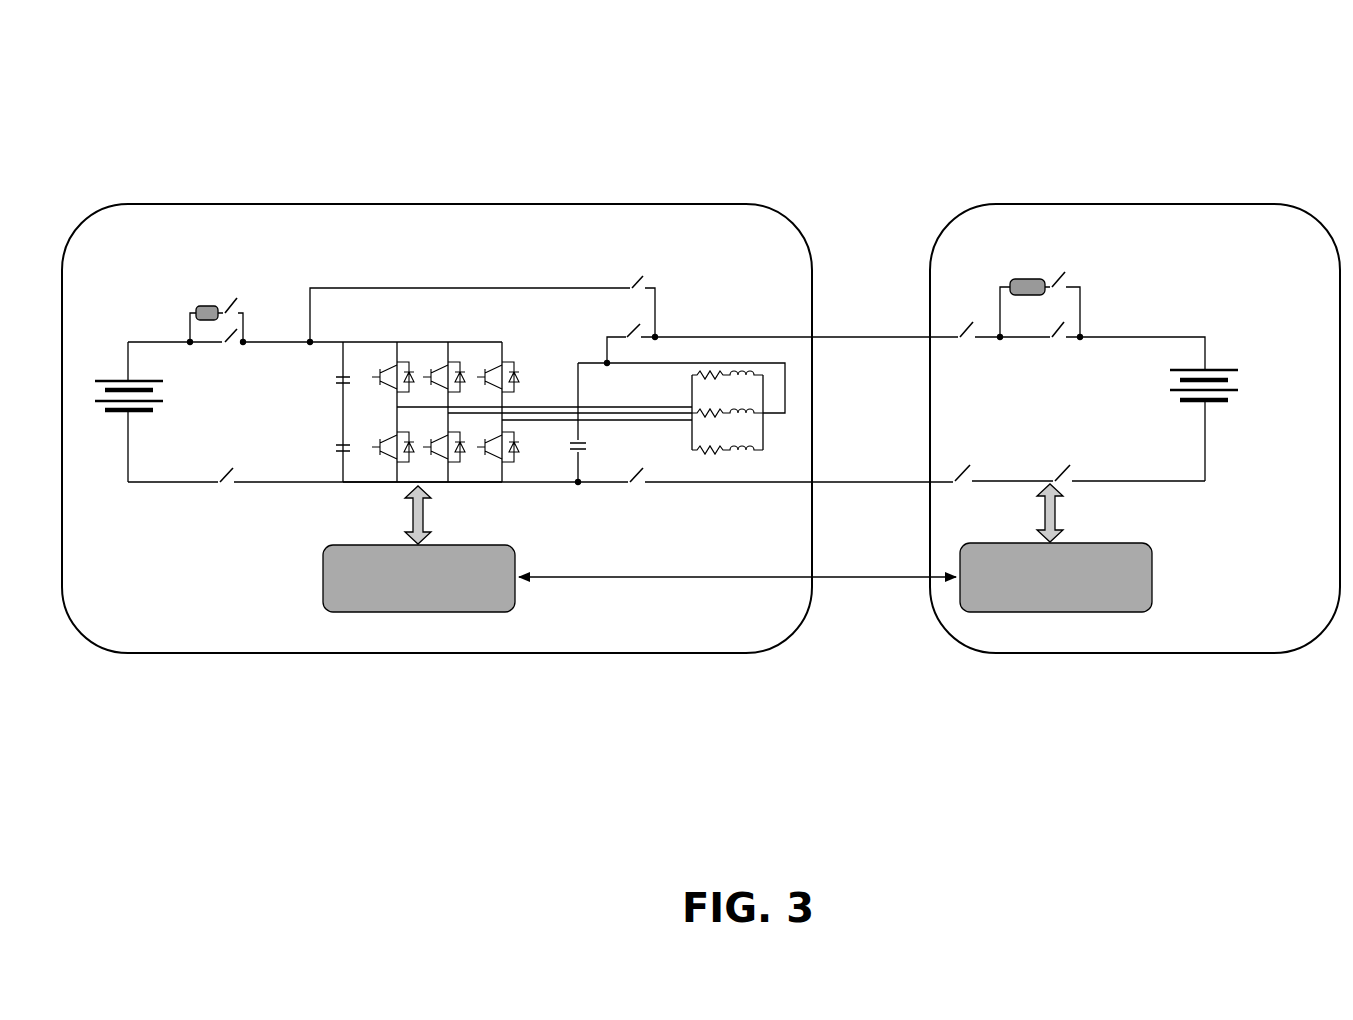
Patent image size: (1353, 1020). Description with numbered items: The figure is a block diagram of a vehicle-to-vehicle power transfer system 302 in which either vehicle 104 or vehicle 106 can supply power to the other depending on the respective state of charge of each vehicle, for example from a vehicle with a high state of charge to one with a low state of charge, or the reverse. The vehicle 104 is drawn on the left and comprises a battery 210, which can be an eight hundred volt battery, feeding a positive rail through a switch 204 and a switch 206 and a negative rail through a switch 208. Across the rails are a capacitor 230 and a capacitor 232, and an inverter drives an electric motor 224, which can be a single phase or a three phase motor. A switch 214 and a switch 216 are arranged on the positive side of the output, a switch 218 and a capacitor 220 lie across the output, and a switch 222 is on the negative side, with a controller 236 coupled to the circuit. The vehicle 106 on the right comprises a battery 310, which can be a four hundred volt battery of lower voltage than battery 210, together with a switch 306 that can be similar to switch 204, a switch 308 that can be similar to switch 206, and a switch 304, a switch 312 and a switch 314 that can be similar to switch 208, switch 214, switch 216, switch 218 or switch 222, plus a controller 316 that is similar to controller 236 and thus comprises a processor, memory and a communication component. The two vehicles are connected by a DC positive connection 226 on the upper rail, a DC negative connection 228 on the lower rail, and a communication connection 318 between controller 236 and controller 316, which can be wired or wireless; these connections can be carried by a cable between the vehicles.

The vehicle-to-vehicle power transfer system 302 is at (940, 60).
The vehicle 104 is at (478, 203).
The vehicle 106 is at (1063, 203).
The switch 204 is at (224, 298).
The switch 206 is at (234, 348).
The switch 208 is at (223, 496).
The battery 210 is at (110, 425).
The switch 214 is at (632, 276).
The switch 216 is at (633, 327).
The switch 218 is at (574, 384).
The capacitor 220 is at (572, 458).
The switch 222 is at (640, 491).
The electric motor 224 is at (774, 449).
The DC positive connection 226 is at (839, 328).
The DC negative connection 228 is at (834, 490).
The capacitor 230 is at (328, 385).
The capacitor 232 is at (326, 453).
The controller 236 is at (419, 549).
The switch 304 is at (956, 320).
The switch 306 is at (1051, 266).
The switch 308 is at (1056, 345).
The battery 310 is at (1221, 415).
The switch 312 is at (969, 456).
The switch 314 is at (1078, 454).
The controller 316 is at (1056, 548).
The communication connection 318 is at (874, 584).